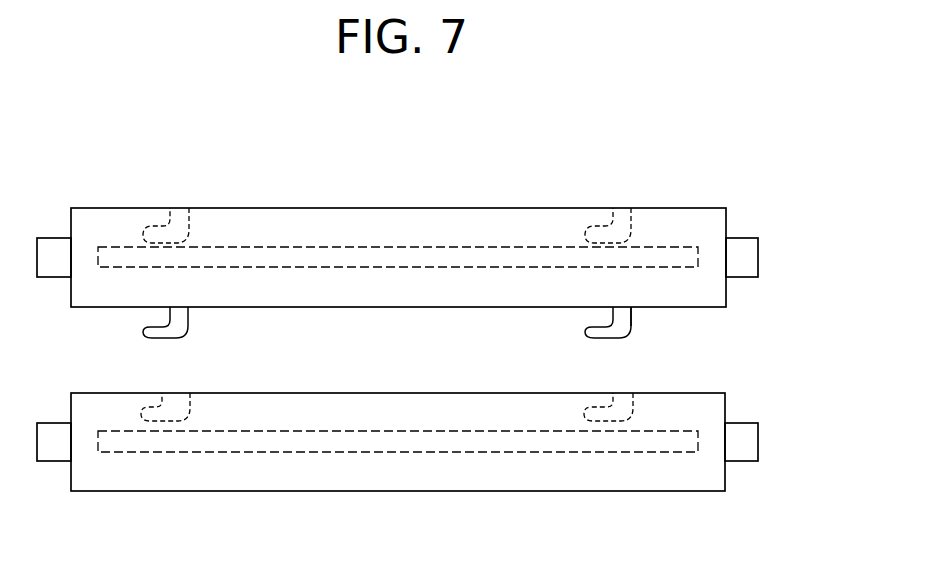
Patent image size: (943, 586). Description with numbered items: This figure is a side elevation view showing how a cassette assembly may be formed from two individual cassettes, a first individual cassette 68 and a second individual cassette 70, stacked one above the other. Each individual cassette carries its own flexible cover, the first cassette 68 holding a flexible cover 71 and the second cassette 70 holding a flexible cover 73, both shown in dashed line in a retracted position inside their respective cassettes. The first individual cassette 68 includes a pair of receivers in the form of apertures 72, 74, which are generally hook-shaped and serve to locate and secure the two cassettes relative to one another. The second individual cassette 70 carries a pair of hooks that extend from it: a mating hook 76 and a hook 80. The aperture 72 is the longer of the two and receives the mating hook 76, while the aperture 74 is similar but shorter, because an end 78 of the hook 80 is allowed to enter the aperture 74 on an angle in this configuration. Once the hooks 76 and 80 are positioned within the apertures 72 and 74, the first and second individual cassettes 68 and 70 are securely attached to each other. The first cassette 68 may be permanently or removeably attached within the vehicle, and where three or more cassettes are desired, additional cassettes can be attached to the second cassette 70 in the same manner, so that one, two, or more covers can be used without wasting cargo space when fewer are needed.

The first individual cassette 68 is at (725, 407).
The second individual cassette 70 is at (508, 208).
The flexible cover 71 is at (397, 452).
The aperture 72 is at (161, 422).
The flexible cover 73 is at (269, 248).
The aperture 74 is at (604, 422).
The mating hook 76 is at (188, 327).
The end 78 is at (585, 330).
The hook 80 is at (631, 327).